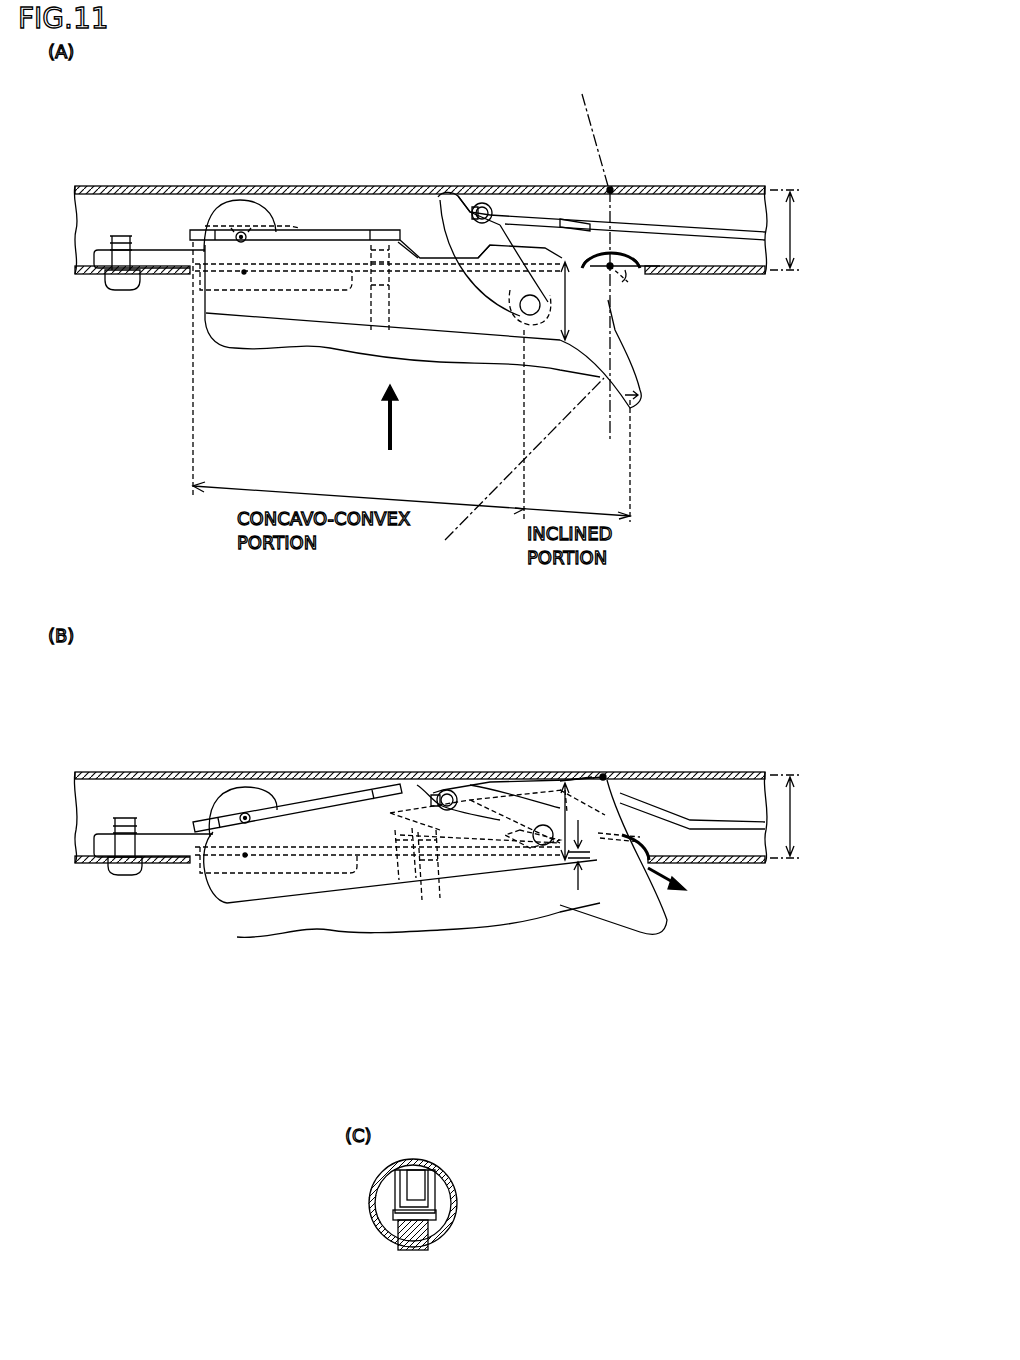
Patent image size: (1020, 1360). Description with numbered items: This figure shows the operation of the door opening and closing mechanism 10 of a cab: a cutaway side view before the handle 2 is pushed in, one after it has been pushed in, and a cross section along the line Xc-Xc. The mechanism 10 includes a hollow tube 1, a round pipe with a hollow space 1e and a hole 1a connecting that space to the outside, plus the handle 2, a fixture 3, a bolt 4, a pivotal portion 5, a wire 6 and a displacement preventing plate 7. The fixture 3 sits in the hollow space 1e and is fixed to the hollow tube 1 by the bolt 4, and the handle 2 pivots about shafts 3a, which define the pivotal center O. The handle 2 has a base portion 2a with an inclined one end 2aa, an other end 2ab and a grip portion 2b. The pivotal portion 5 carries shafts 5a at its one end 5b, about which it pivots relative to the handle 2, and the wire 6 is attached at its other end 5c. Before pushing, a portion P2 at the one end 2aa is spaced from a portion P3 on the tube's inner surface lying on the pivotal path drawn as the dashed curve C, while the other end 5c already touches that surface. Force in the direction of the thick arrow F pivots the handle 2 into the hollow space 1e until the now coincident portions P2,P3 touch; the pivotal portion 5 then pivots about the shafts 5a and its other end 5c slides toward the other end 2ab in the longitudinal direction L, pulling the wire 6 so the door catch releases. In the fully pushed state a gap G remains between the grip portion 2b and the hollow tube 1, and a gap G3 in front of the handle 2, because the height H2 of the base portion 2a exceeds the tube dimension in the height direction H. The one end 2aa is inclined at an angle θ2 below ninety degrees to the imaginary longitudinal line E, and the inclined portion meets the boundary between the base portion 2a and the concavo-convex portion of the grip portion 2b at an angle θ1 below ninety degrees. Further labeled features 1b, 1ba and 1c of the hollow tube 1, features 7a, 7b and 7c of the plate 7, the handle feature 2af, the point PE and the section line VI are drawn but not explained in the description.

The hollow tube 1 is at (313, 228).
The hole 1a is at (585, 138).
The catch portion 1b is at (537, 190).
The pivot hole 1ba is at (276, 232).
The tip portion 1c is at (578, 190).
The hollow space 1e is at (362, 210).
The handle 2 is at (160, 292).
The base portion 2a is at (222, 296).
The one end of base portion 2aa is at (620, 290).
The other end 2ab is at (180, 275).
The slot 2af is at (378, 325).
The grip portion 2b is at (230, 332).
The fixture 3 is at (146, 258).
The shafts 3a is at (217, 238).
The bolt 4 is at (118, 286).
The pivotal portion 5 is at (498, 224).
The shafts 5a is at (452, 258).
The one end of pivotal portion 5b is at (524, 522).
The other end of pivotal portion 5c is at (466, 206).
The wire 6 is at (728, 232).
The displacement preventing plate 7 is at (308, 240).
The lock plate left end 7a is at (214, 236).
The lock plate right end 7b is at (340, 240).
The lock plate projection 7c is at (418, 325).
The door opening and closing mechanism 10 is at (461, 120).
The pivotal center O is at (242, 232).
The imaginary curve C- C is at (520, 314).
The imaginary straight line E- E is at (626, 265).
The force direction F is at (393, 426).
The gap G is at (578, 878).
The gap G3 is at (674, 895).
The height direction H is at (178, 505).
The height of base portion H2 is at (605, 328).
The longitudinal direction L is at (229, 564).
The portion at one end of base portion P2 is at (633, 188).
The portion on inner peripheral surface P3 is at (608, 188).
The contacting portions P2,P3 is at (603, 790).
The plate end PE is at (212, 360).
The section line VI is at (240, 114).
The line Xc- Xc is at (175, 752).